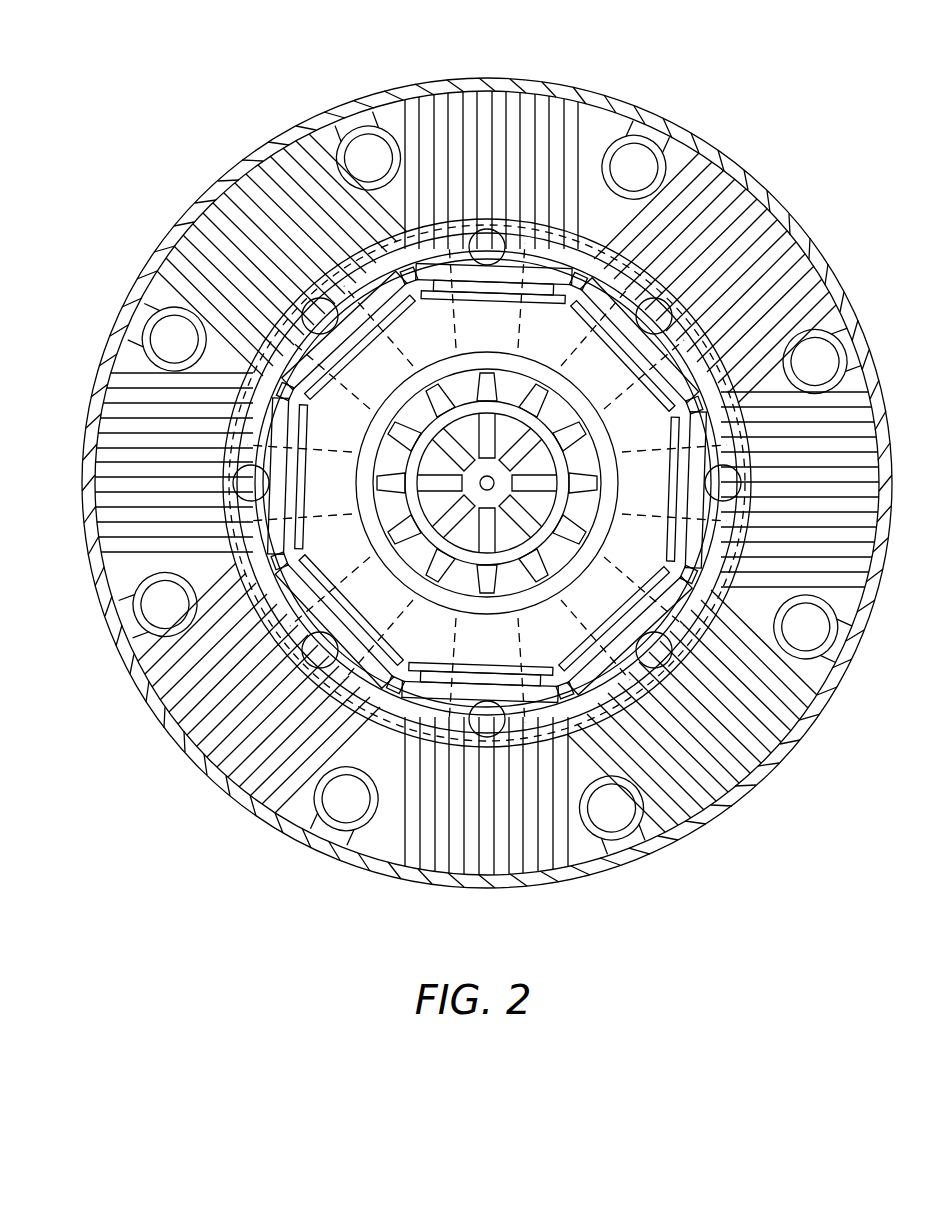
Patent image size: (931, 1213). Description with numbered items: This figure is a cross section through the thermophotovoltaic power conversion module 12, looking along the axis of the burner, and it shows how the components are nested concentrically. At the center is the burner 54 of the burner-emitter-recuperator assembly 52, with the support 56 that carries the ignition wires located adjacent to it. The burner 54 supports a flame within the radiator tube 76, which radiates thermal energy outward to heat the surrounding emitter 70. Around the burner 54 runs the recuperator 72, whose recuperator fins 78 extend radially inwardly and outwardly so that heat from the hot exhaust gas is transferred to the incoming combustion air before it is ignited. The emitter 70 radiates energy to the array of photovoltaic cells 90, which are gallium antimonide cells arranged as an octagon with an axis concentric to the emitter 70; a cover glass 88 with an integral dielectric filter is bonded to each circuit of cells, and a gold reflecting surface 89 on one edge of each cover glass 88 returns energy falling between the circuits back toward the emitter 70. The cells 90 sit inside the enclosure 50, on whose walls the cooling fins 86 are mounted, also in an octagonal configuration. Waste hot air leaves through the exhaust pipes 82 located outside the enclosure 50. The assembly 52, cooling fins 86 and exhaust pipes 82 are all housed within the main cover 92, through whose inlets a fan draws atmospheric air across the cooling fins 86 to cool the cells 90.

The thermophotovoltaic (TPV) power conversion module 12 is at (158, 160).
The enclosure 50 is at (540, 263).
The burner-emitter-recuperator (BER) assembly 52 is at (540, 425).
The burner 54 is at (490, 495).
The support 56 is at (423, 570).
The emitter 70 is at (352, 465).
The recuperator 72 is at (440, 400).
The radiator tube 76 is at (585, 452).
The recuperator fins 78 is at (580, 492).
The exhaust pipes 82 is at (398, 95).
The cooling fins 86 is at (497, 125).
The cover glass 88 is at (448, 285).
The gold reflecting surface 89 is at (565, 285).
The photovoltaic cells 90 is at (525, 648).
The main cover 92 is at (266, 138).